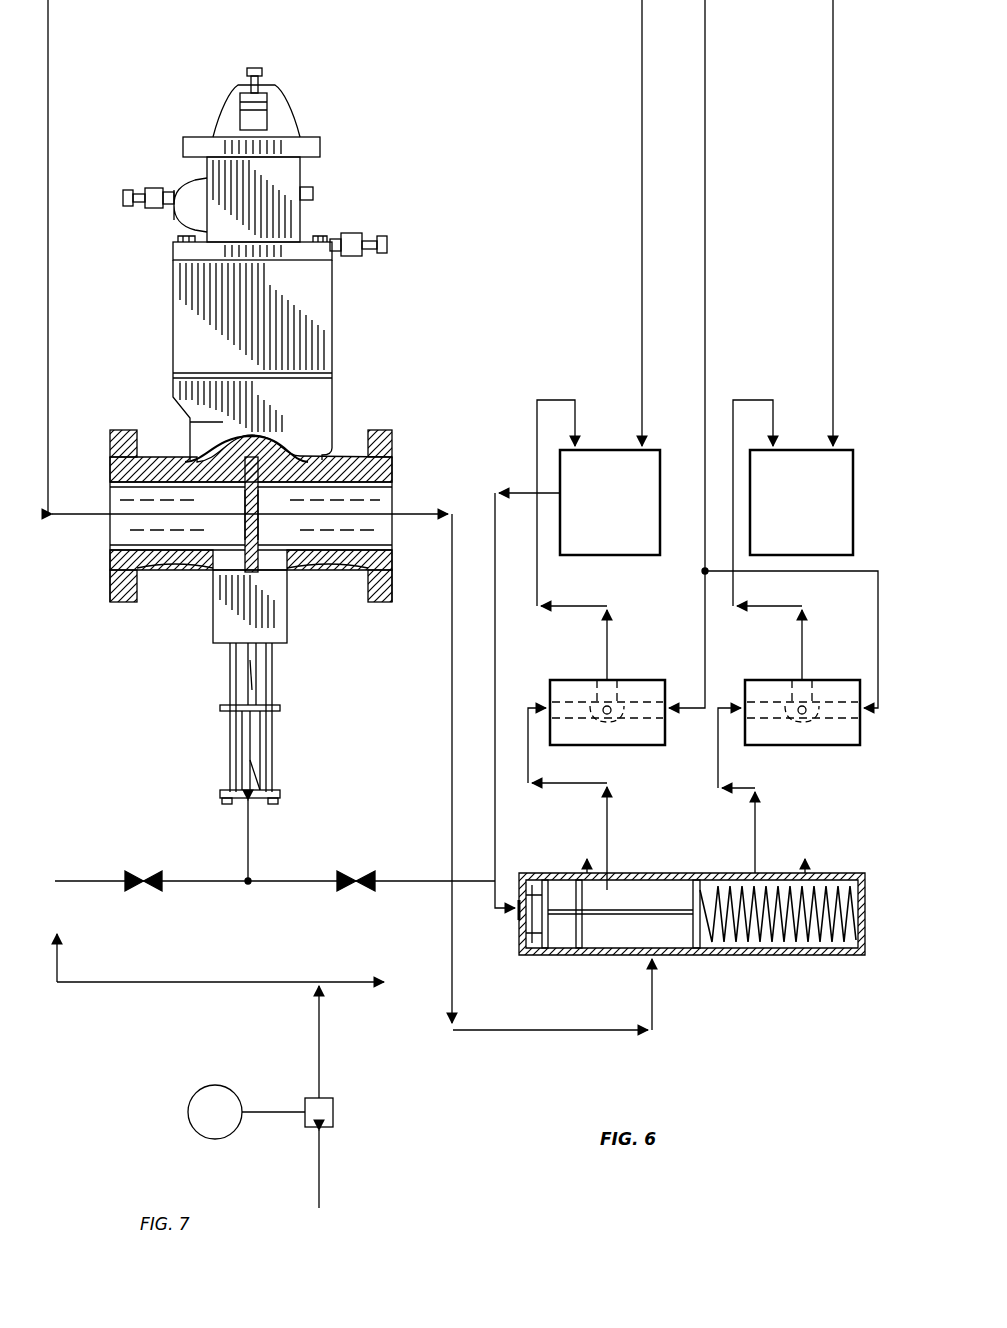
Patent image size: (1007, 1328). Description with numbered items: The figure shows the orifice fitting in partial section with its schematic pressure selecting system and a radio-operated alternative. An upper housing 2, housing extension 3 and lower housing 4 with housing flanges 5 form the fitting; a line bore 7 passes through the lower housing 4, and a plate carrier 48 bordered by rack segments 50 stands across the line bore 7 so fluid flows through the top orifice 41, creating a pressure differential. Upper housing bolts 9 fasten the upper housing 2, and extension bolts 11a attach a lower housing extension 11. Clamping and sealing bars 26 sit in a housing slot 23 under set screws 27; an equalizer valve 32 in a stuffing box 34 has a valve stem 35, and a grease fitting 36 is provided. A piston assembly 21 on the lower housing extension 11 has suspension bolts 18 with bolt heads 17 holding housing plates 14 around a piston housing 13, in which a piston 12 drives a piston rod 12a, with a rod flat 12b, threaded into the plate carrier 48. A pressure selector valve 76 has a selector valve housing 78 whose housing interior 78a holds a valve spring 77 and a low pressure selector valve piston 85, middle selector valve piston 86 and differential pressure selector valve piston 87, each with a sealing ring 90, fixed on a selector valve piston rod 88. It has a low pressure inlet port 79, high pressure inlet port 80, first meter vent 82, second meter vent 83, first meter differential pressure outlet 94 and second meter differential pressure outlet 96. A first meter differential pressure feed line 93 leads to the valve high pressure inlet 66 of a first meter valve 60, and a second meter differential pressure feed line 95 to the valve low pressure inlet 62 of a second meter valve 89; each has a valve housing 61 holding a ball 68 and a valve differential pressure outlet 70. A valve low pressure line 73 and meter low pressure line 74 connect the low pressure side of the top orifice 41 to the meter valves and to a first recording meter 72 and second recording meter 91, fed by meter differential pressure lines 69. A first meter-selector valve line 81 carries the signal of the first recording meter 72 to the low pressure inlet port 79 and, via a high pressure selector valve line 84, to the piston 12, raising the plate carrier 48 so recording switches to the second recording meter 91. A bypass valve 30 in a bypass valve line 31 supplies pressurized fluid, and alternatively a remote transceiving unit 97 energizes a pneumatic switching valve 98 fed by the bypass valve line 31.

In FIG. 7, the upper housing 2 is at (202, 162).
In FIG. 7, the housing extension 3 is at (172, 343).
In FIG. 7, the lower housing 4 is at (330, 428).
In FIG. 7, the housing flanges 5 is at (125, 428).
In FIG. 7, the line bore 7 is at (392, 503).
In FIG. 7, the upper housing bolts 9 is at (178, 238).
In FIG. 7, the lower housing extension 11 is at (211, 602).
In FIG. 7, the extension bolts 11a is at (280, 645).
In FIG. 7, the piston 12 is at (262, 787).
In FIG. 7, the piston rod 12a is at (250, 690).
In FIG. 7, the rod flat 12b is at (250, 670).
In FIG. 7, the piston housing 13 is at (246, 750).
In FIG. 7, the housing plates 14 is at (220, 708).
In FIG. 7, the bolt heads 17 is at (225, 806).
In FIG. 7, the suspension bolts 18 is at (232, 763).
In FIG. 7, the piston assembly 21 is at (274, 727).
In FIG. 7, the housing slot 23 is at (248, 88).
In FIG. 7, the clamping and sealing bars 26 is at (270, 110).
In FIG. 7, the set screws 27 is at (262, 72).
In FIG. 7, the bypass valve 30 is at (150, 871).
In FIG. 7, the bypass valve line 31 is at (82, 881).
In FIG. 7, the equalizer valve 32 is at (358, 231).
In FIG. 7, the stuffing box 34 is at (153, 188).
In FIG. 7, the valve stem 35 is at (127, 207).
In FIG. 7, the grease fitting 36 is at (121, 197).
In FIG. 7, the top orifice 41 is at (260, 514).
In FIG. 7, the plate carrier 48 is at (260, 480).
In FIG. 7, the rack segments 50 is at (243, 514).
In FIG. 6, the first meter valve 60 is at (612, 746).
In FIG. 6, the valve housing 61 is at (666, 744).
In FIG. 6, the valve low pressure inlet 62 is at (668, 703).
In FIG. 6, the valve high pressure inlet 66 is at (548, 704).
In FIG. 6, the ball 68 is at (607, 714).
In FIG. 6, the meter differential pressure lines 69 is at (558, 606).
In FIG. 6, the valve differential pressure outlet 70 is at (612, 688).
In FIG. 6, the first recording meter 72 is at (579, 502).
In FIG. 6, the valve low pressure line 73 is at (705, 390).
In FIG. 7, the meter low pressure line 74 is at (50, 320).
In FIG. 6, the meter low pressure line 74 is at (642, 388).
In FIG. 6, the pressure selector valve 76 is at (762, 956).
In FIG. 6, the valve spring 77 is at (800, 948).
In FIG. 6, the selector valve housing 78 is at (840, 955).
In FIG. 6, the housing interior 78a is at (655, 895).
In FIG. 6, the low pressure inlet port 79 is at (519, 915).
In FIG. 6, the high pressure inlet port 80 is at (655, 960).
In FIG. 7, the first meter-selector valve line 81 is at (250, 881).
In FIG. 6, the first meter-selector valve line 81 is at (496, 822).
In FIG. 6, the first meter vent 82 is at (587, 873).
In FIG. 6, the second meter vent 83 is at (808, 862).
In FIG. 7, the high pressure selector valve line 84 is at (452, 700).
In FIG. 6, the high pressure selector valve line 84 is at (540, 1032).
In FIG. 6, the low pressure selector valve piston 85 is at (538, 948).
In FIG. 6, the middle selector valve piston 86 is at (563, 948).
In FIG. 6, the differential pressure selector valve piston 87 is at (697, 948).
In FIG. 6, the selector valve piston rod 88 is at (630, 915).
In FIG. 6, the second meter valve 89 is at (800, 746).
In FIG. 6, the sealing ring 90 is at (546, 880).
In FIG. 6, the second recording meter 91 is at (801, 502).
In FIG. 6, the first meter differential pressure feed line 93 is at (587, 799).
In FIG. 6, the first meter differential pressure outlet 94 is at (607, 873).
In FIG. 6, the second meter differential pressure feed line 95 is at (777, 790).
In FIG. 6, the second meter differential pressure outlet 96 is at (753, 873).
In FIG. 7, the remote transceiving unit 97 is at (247, 1103).
In FIG. 7, the pneumatic switching valve 98 is at (334, 1100).